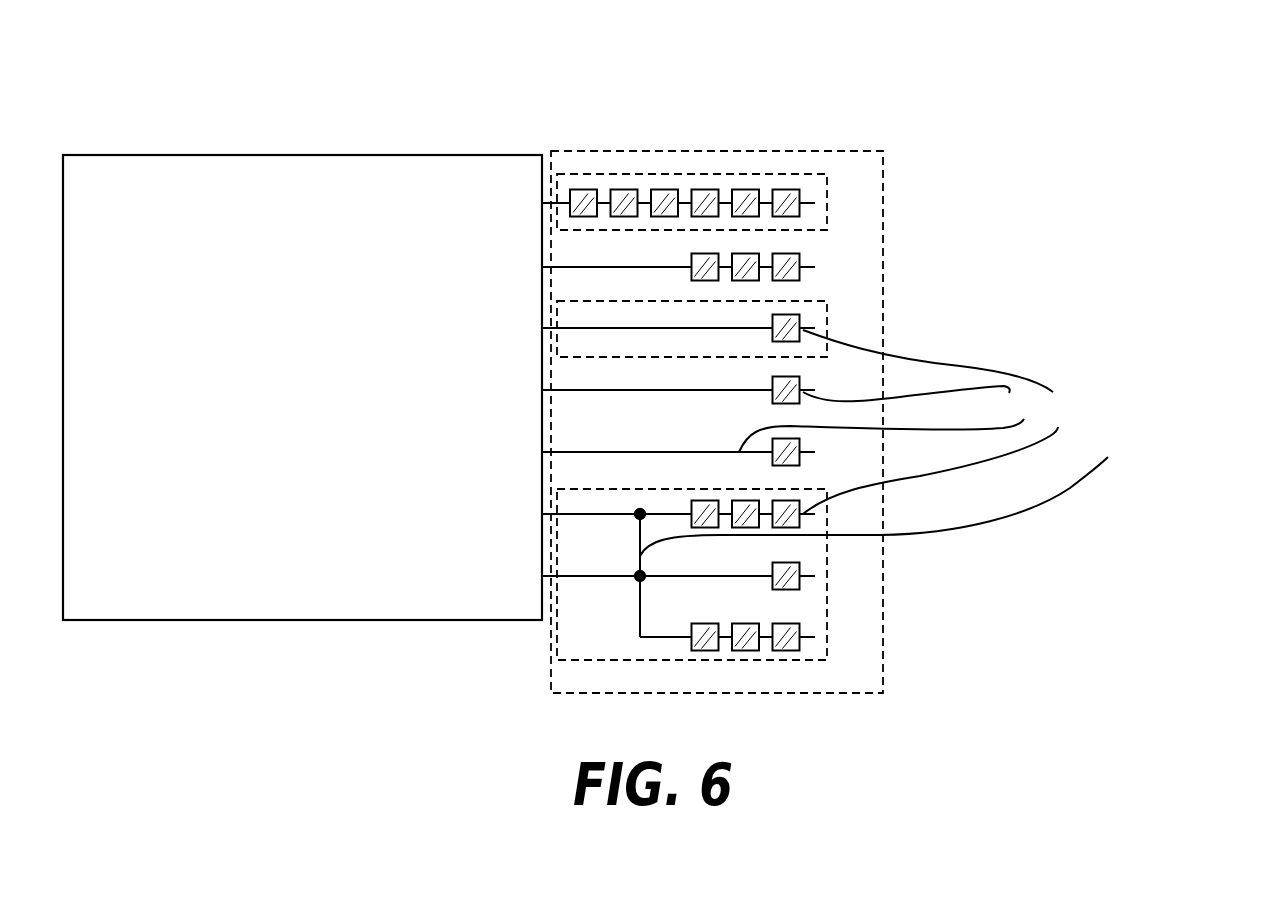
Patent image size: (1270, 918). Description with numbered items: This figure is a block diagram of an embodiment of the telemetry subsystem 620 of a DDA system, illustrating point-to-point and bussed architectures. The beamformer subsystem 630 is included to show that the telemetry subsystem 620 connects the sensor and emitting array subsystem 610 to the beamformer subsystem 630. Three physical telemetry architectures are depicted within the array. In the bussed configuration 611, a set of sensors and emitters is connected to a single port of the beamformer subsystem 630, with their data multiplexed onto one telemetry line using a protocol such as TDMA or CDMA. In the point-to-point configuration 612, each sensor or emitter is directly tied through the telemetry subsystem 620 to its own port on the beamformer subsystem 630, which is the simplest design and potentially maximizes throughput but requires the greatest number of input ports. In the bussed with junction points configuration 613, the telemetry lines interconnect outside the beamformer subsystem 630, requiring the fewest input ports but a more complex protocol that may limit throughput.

The sensor and emitting array subsystem 610 is at (683, 150).
The bussed configuration 611 is at (828, 190).
The point-to-point configuration 612 is at (828, 300).
The bussed with junction points configuration 613 is at (828, 620).
The telemetry subsystem 620 is at (944, 443).
The beamformer subsystem 630 is at (318, 412).